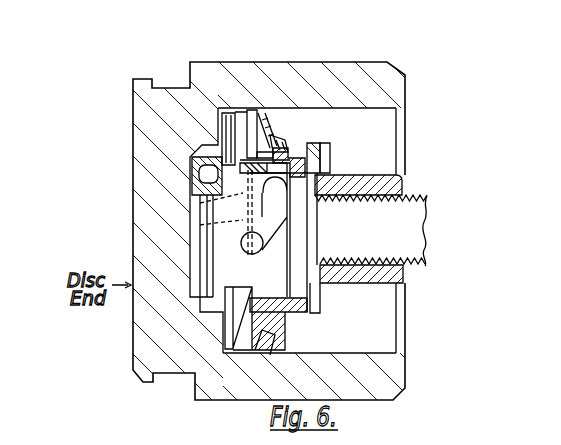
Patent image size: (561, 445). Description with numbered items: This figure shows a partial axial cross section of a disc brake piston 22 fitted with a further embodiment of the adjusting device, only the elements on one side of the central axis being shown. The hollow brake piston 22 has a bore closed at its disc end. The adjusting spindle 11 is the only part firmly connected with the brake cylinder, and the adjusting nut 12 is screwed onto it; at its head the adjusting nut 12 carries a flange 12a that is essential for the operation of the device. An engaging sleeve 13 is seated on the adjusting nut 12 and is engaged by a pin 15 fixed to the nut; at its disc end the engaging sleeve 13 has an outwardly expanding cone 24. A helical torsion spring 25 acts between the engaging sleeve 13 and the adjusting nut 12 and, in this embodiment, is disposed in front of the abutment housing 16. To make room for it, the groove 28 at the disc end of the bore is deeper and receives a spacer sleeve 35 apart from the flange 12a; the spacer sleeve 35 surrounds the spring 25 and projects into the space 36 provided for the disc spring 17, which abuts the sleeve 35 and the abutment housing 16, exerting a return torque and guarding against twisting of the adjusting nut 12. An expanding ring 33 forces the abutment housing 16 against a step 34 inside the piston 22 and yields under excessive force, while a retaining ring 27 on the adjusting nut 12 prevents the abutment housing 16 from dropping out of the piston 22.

The adjusting spindle 11 is at (414, 231).
The adjusting nut 12 is at (343, 182).
The flange 12a is at (190, 176).
The engaging sleeve 13 is at (308, 155).
The pin 15 is at (240, 243).
The abutment housing 16 is at (280, 152).
The disc spring 17 is at (224, 333).
The brake piston 22 is at (396, 95).
The cone 24 is at (263, 135).
The helical torsion spring 25 is at (245, 215).
The retaining ring 27 is at (320, 150).
The groove 28 is at (237, 168).
The expanding ring 33 is at (275, 132).
The step 34 is at (254, 138).
The spacer sleeve 35 is at (222, 113).
The space 36 is at (238, 110).